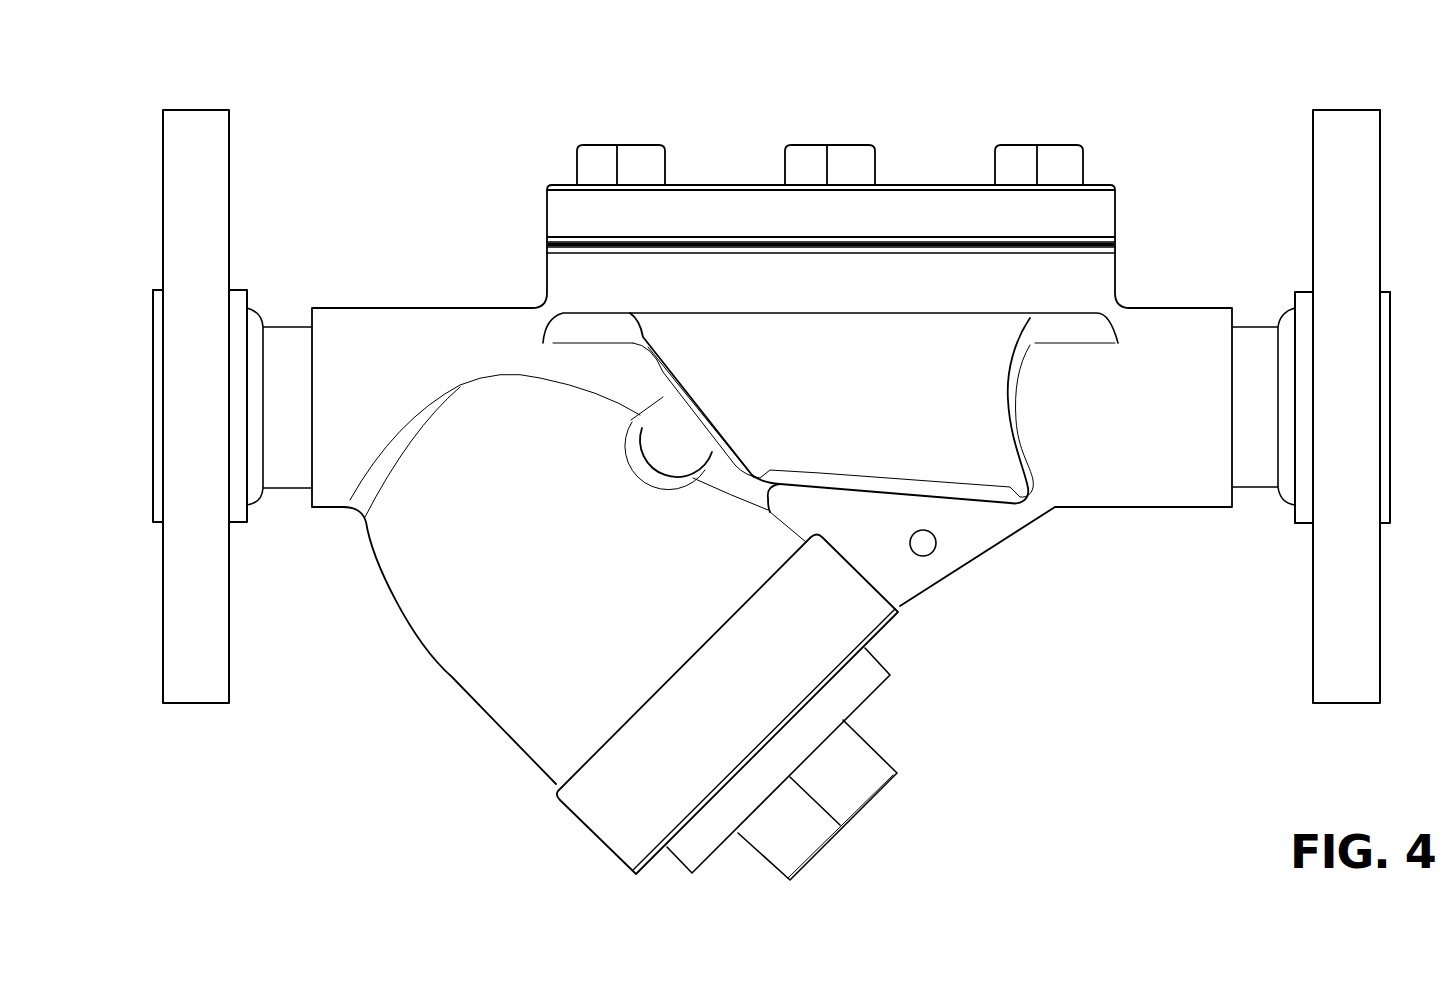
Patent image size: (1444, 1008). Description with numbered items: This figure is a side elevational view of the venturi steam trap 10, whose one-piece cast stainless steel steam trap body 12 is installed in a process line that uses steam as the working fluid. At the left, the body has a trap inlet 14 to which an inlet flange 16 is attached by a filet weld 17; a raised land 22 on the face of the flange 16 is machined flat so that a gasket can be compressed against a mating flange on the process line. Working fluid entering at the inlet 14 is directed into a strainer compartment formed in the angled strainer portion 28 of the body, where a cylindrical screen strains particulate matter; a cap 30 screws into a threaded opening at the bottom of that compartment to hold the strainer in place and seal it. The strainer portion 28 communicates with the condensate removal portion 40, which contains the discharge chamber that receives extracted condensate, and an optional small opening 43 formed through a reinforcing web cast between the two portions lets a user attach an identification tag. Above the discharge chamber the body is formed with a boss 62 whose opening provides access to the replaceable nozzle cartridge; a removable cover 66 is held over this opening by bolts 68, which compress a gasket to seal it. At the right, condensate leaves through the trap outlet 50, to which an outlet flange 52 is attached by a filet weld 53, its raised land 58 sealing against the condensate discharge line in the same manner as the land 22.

The venturi steam trap 10 is at (869, 106).
The steam trap body 12 is at (1173, 488).
The trap inlet 14 is at (155, 398).
The inlet flange 16 is at (197, 123).
The filet weld 17 is at (256, 318).
The raised land 22 is at (155, 298).
The strainer portion 28 is at (458, 665).
The cap 30 is at (865, 760).
The condensate removal portion 40 is at (986, 472).
The small opening 43 is at (930, 552).
The trap outlet 50 is at (1392, 395).
The outlet flange 52 is at (1346, 124).
The filet weld 53 is at (1285, 318).
The raised land 58 is at (1392, 302).
The boss 62 is at (553, 272).
The removable cover 66 is at (1100, 210).
The bolts 68 is at (588, 165).